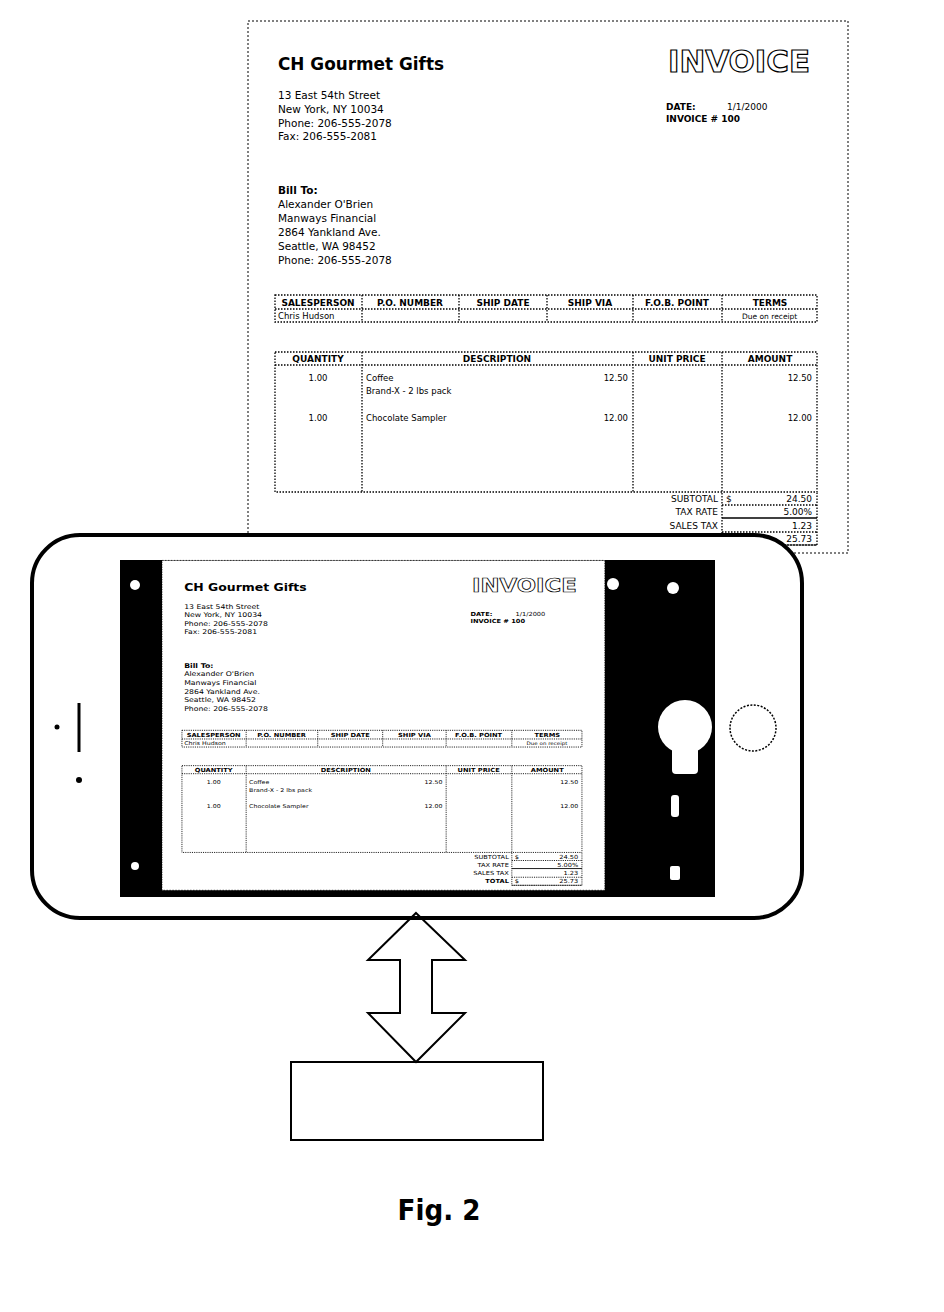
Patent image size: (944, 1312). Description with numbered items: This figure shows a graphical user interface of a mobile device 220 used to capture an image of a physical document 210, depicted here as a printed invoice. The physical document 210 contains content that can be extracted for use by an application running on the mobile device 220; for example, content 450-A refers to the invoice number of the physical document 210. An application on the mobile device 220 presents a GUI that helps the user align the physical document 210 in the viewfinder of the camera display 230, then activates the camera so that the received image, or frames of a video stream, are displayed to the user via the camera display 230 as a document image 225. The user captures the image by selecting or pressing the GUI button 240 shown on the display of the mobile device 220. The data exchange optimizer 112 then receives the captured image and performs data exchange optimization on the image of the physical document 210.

The physical document 210 is at (476, 287).
The mobile device 220 is at (436, 712).
The content 450-A is at (657, 118).
The document image 225 is at (315, 843).
The camera display 230 is at (480, 791).
The GUI button 240 is at (693, 730).
The data exchange optimizer 112 is at (400, 1134).